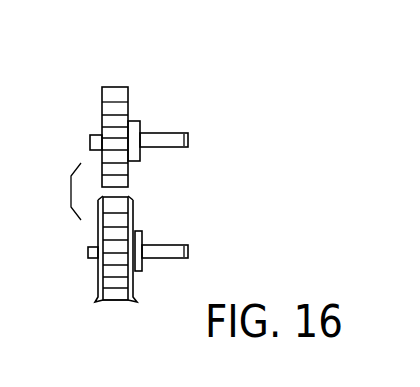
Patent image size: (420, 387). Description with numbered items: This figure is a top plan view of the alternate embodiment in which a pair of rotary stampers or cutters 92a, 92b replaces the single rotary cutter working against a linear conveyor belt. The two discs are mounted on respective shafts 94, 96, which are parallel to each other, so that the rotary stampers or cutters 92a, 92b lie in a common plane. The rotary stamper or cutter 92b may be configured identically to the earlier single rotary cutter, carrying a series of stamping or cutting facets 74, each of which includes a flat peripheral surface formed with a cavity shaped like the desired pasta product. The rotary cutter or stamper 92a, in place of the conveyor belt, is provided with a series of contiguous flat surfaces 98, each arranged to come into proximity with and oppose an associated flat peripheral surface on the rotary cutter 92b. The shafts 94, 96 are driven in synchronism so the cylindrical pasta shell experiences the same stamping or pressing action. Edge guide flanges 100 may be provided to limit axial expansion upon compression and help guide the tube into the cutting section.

The stamping or cutting facet 74 is at (118, 300).
The rotary stamper or cutter 92a is at (129, 102).
The rotary stamper or cutter 92b is at (96, 281).
The shaft 94 is at (188, 138).
The shaft 96 is at (188, 257).
The contiguous flat surfaces 98 is at (114, 95).
The edge guide flanges 100 is at (135, 202).